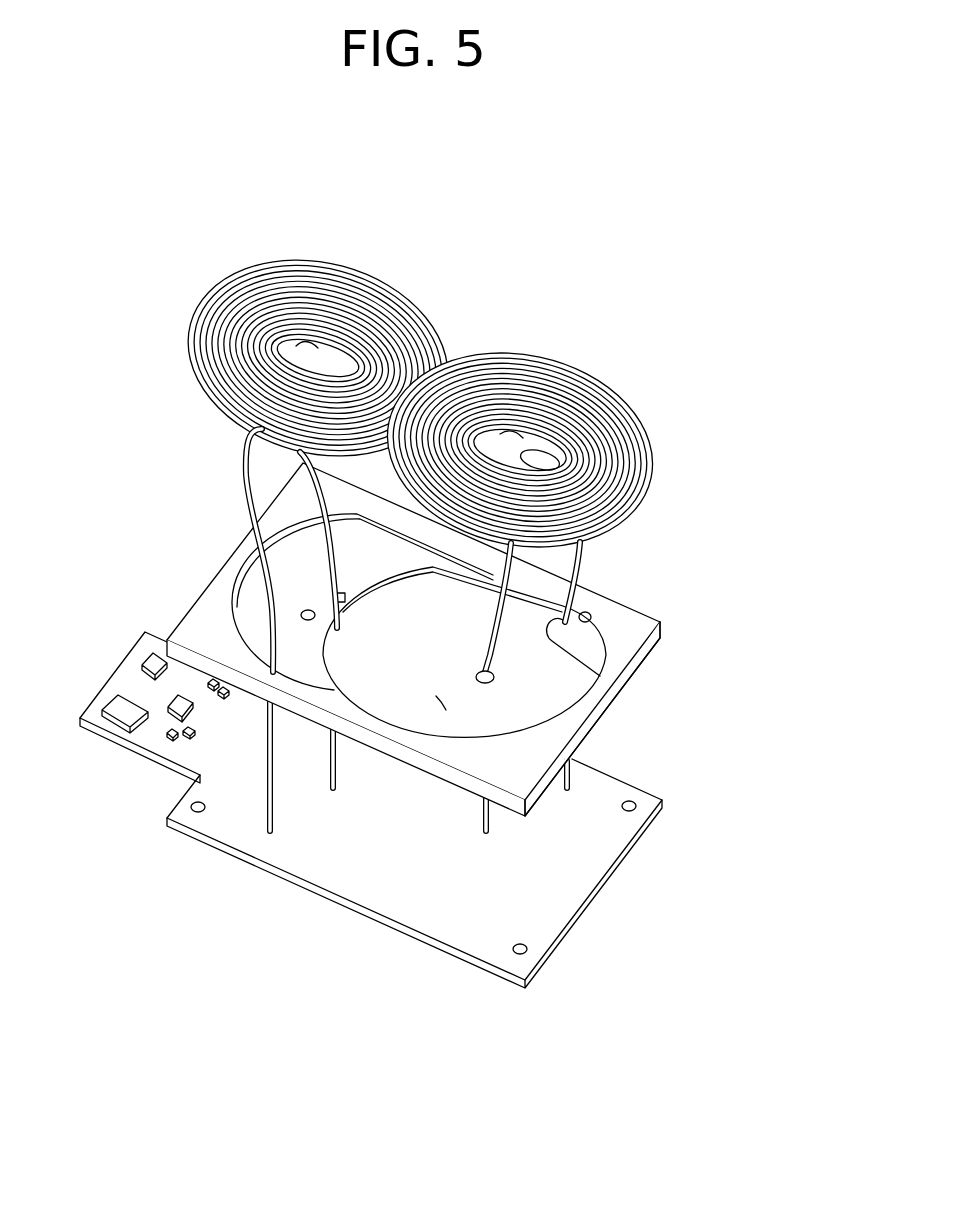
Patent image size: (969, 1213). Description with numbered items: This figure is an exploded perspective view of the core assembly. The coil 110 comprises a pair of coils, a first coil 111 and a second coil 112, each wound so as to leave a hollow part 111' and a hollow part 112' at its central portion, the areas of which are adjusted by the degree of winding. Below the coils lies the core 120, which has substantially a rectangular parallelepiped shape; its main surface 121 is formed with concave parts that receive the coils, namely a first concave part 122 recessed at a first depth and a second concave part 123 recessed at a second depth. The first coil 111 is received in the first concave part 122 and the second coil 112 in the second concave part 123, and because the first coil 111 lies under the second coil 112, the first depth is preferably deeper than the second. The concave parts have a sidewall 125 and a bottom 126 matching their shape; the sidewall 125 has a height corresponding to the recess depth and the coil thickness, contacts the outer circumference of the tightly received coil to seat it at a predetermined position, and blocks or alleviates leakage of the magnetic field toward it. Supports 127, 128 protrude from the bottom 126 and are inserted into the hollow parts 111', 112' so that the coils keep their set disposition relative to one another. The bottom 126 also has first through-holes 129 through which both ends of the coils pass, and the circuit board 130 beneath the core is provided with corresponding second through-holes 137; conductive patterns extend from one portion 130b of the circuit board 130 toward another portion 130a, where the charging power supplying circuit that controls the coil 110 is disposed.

The coil 110 is at (419, 443).
The first coil 111 is at (521, 436).
The hollow part 111' is at (548, 389).
The second coil 112 is at (318, 343).
The hollow part 112' is at (305, 293).
The core 120 is at (451, 754).
The main surface 121 is at (622, 657).
The first concave part 122 is at (497, 675).
The second concave part 123 is at (248, 608).
The sidewall 125 is at (583, 610).
The bottom 126 is at (440, 700).
The support 127 is at (573, 758).
The support 128 is at (330, 603).
The first through-hole 129 is at (555, 685).
The circuit board 130 is at (343, 819).
The another portion of the circuit board 130a is at (158, 735).
The one portion of the circuit board 130b is at (376, 868).
The second through-hole 137 is at (490, 824).